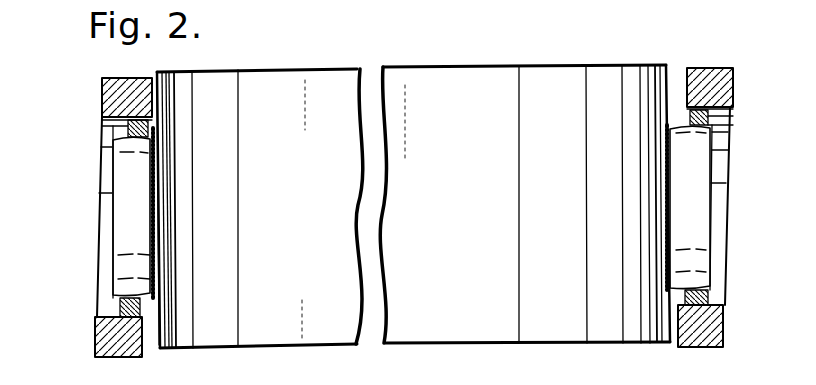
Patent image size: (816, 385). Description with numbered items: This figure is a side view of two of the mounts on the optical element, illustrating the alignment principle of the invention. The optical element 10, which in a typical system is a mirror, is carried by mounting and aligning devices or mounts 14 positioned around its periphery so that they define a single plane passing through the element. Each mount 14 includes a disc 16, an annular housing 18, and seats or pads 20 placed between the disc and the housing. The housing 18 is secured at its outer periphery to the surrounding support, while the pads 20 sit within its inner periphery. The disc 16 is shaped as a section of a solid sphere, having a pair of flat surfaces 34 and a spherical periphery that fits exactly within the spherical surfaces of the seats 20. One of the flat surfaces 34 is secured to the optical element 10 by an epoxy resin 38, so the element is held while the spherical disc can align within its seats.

The optical element 10 is at (470, 68).
The mounting and aligning device 14 is at (94, 270).
The disc 16 is at (120, 221).
The annular housing 18 is at (101, 79).
The seat 20 is at (126, 128).
The flat surface 34 is at (120, 170).
The epoxy resin 38 is at (155, 179).